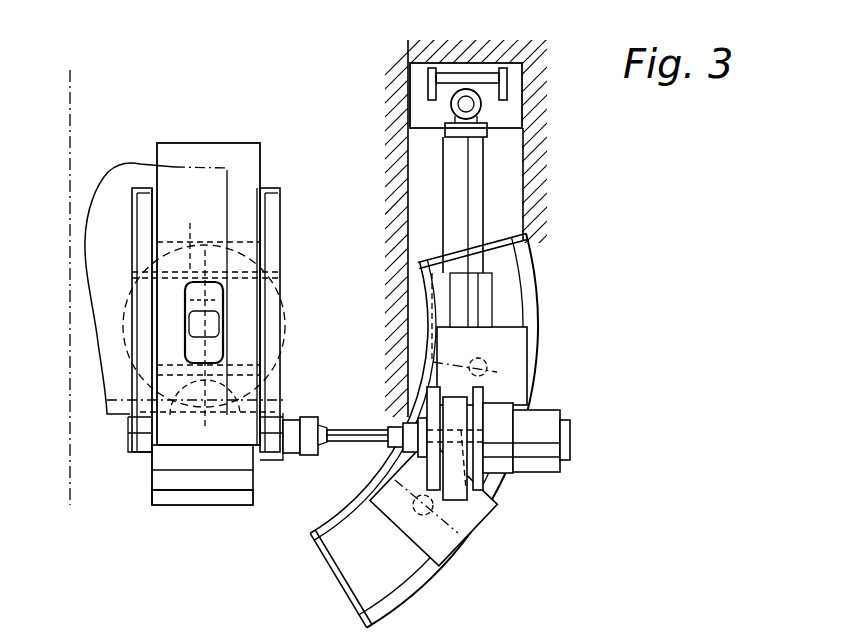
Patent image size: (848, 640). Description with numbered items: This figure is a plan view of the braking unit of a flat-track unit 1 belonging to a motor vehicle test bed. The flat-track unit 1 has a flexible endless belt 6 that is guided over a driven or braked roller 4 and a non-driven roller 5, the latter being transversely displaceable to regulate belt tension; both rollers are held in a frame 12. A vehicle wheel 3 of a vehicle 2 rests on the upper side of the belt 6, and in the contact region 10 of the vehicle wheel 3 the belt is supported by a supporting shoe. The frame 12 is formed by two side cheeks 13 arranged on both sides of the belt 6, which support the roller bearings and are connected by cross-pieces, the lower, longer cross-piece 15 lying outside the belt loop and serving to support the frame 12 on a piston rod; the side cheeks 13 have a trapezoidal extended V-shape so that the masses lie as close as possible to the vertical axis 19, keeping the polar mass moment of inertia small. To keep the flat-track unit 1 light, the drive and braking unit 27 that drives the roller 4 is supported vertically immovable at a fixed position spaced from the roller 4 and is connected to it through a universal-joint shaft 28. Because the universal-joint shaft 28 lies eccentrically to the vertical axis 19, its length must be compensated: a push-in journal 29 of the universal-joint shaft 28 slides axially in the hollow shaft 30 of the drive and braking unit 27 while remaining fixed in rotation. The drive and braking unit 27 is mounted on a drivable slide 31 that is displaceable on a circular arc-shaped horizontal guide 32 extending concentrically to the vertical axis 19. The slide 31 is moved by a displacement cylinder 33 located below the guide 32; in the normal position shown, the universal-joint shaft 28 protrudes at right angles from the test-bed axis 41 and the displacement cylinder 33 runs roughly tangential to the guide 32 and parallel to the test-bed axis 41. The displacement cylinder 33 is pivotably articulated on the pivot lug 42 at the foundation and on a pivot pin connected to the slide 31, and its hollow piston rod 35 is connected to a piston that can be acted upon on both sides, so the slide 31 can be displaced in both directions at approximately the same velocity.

The flat-track unit 1 is at (210, 493).
The vehicle 2 is at (105, 190).
The vehicle wheel 3 is at (212, 300).
The driven or braked roller 4 is at (255, 482).
The non-driven roller 5 is at (240, 143).
The flexible endless belt 6 is at (188, 185).
The contact region 10 is at (225, 320).
The frame 12 is at (290, 199).
The side cheeks 13 is at (138, 253).
The lower cross-piece 15 is at (277, 410).
The vertical axis 19 is at (165, 407).
The drive and braking unit 27 is at (503, 396).
The universal-joint shaft 28 is at (358, 428).
The push-in journal 29 is at (381, 357).
The hollow shaft 30 is at (487, 527).
The slide 31 is at (516, 358).
The circular arc-shaped horizontal guide 32 is at (506, 287).
The displacement cylinder 33 is at (487, 203).
The piston rod 35 is at (458, 152).
The test-bed axis 41 is at (72, 97).
The pivot lug 42 is at (485, 110).